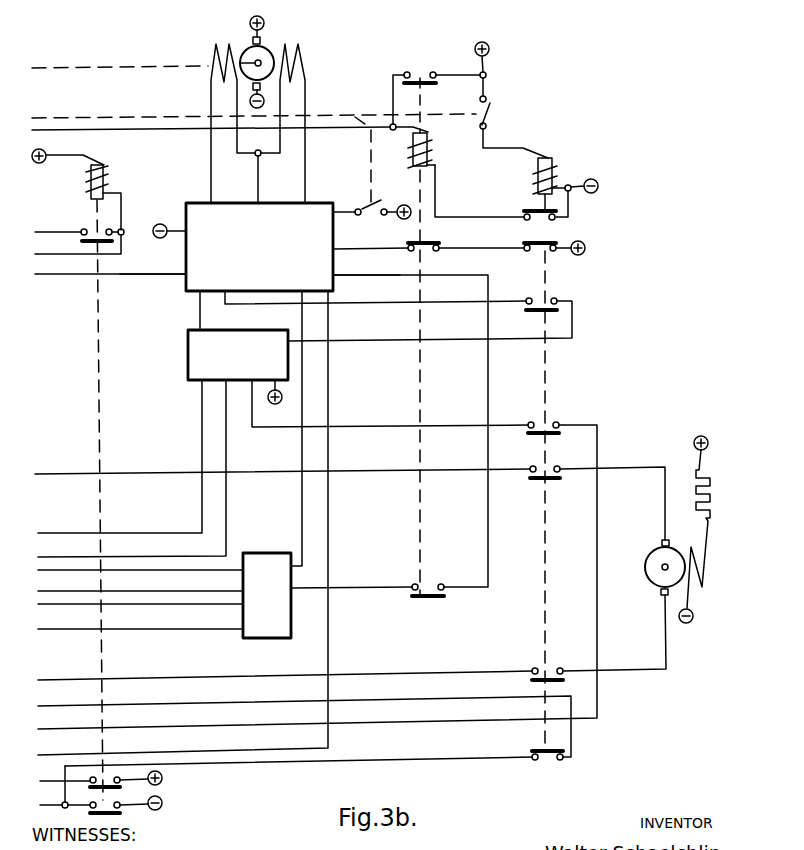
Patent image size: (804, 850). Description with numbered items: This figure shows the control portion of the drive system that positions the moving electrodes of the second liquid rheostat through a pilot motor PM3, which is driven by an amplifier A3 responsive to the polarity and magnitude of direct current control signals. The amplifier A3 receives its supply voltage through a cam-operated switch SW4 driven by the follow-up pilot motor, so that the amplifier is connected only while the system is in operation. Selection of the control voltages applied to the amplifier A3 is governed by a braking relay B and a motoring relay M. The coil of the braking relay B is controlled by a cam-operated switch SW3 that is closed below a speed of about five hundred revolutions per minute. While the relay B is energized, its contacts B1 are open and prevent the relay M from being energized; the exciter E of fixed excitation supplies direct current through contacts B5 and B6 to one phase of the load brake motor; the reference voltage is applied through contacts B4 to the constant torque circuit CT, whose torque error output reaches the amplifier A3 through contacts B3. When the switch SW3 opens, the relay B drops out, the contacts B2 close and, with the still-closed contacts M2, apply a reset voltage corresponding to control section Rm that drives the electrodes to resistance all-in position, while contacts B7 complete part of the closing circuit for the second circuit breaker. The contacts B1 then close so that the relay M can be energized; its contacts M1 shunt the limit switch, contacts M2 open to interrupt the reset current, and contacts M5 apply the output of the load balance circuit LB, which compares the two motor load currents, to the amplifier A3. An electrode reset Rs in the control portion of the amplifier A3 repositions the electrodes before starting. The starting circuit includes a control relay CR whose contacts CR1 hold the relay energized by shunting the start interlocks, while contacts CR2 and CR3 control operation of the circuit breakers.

The pilot motor PM3 is at (263, 50).
The control relay CR is at (72, 188).
The control relay contacts CR1 is at (89, 228).
The control relay contacts CR2 is at (110, 790).
The control relay contacts CR3 is at (120, 813).
The amplifier A3 is at (243, 247).
The electrode reset Rs is at (166, 275).
The control section of amplifier Rm is at (394, 255).
The cam-operated switch SW4 is at (368, 205).
The cam-operated switch SW3 is at (489, 114).
The contacts of relay M M1 is at (420, 92).
The contacts of relay M M2 is at (431, 246).
The contacts of relay M M5 is at (432, 585).
The motoring relay M is at (456, 157).
The braking relay B is at (574, 169).
The contacts of relay B B1 is at (529, 211).
The contacts of relay B B2 is at (552, 246).
The contacts of relay B B3 is at (549, 307).
The contacts of relay B B4 is at (550, 431).
The contacts of relay B B5 is at (550, 476).
The contacts of relay B B6 is at (551, 677).
The contacts of relay B B7 is at (542, 750).
The constant torque circuit CT is at (248, 364).
The load balance circuit LB is at (278, 605).
The exciter E is at (686, 541).